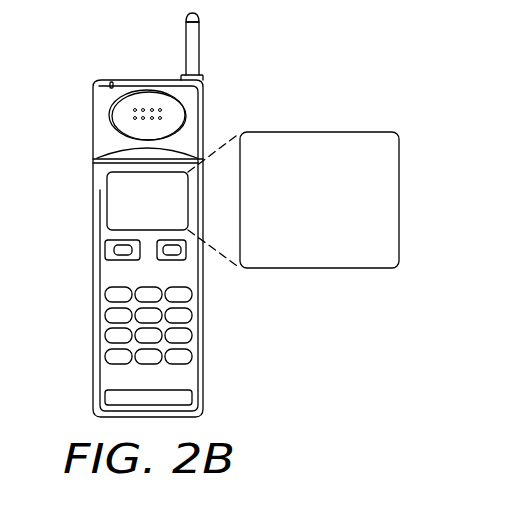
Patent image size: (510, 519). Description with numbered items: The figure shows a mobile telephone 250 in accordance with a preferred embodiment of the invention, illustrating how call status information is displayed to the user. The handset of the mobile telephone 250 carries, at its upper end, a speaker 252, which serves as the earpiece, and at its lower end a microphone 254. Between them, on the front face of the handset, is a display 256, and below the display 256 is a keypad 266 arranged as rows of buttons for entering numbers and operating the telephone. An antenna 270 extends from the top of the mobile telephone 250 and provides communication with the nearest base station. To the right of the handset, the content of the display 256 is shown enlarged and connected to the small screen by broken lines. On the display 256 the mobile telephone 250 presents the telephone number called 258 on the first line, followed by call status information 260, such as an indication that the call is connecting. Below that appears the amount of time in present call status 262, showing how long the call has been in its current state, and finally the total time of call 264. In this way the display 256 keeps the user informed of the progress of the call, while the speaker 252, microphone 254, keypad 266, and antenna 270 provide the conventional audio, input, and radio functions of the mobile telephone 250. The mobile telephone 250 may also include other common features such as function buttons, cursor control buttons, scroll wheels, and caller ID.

The mobile telephone 250 is at (94, 320).
The speaker 252 is at (142, 89).
The microphone 254 is at (192, 397).
The display 256 is at (107, 202).
The telephone number called 258 is at (380, 148).
The call status information 260 is at (380, 177).
The amount of time in present call status 262 is at (378, 198).
The total time of call 264 is at (378, 255).
The keypad 266 is at (214, 285).
The antenna 270 is at (201, 43).